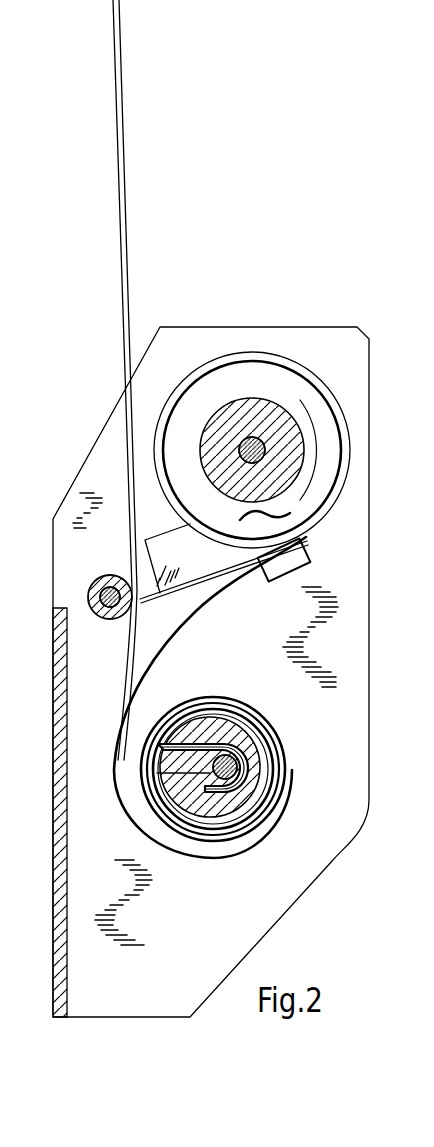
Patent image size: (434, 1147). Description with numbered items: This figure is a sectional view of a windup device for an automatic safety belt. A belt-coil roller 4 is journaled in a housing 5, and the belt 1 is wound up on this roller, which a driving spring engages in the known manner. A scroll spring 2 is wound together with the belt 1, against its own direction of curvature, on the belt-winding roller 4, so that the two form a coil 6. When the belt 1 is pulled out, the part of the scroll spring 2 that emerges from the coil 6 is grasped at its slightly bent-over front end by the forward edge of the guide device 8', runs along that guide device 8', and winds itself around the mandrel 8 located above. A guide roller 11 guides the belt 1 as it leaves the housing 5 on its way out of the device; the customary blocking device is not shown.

The belt 1 is at (122, 190).
The scroll spring 2 is at (224, 367).
The belt-coil roller 4 is at (238, 796).
The housing 5 is at (62, 852).
The coil 6 is at (228, 852).
The mandrel 8 is at (252, 422).
The guide device 8' is at (224, 552).
The guide roller 11 is at (88, 594).